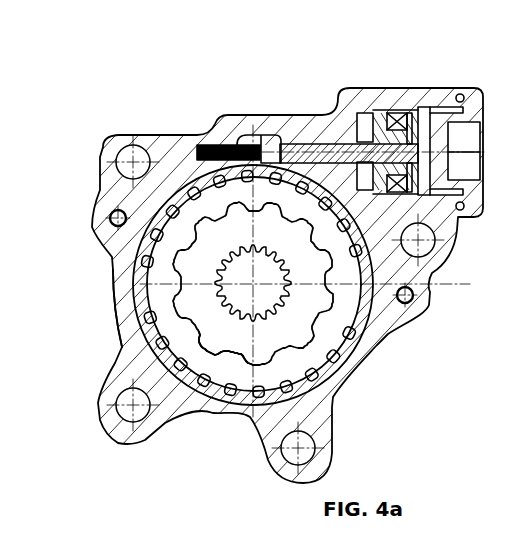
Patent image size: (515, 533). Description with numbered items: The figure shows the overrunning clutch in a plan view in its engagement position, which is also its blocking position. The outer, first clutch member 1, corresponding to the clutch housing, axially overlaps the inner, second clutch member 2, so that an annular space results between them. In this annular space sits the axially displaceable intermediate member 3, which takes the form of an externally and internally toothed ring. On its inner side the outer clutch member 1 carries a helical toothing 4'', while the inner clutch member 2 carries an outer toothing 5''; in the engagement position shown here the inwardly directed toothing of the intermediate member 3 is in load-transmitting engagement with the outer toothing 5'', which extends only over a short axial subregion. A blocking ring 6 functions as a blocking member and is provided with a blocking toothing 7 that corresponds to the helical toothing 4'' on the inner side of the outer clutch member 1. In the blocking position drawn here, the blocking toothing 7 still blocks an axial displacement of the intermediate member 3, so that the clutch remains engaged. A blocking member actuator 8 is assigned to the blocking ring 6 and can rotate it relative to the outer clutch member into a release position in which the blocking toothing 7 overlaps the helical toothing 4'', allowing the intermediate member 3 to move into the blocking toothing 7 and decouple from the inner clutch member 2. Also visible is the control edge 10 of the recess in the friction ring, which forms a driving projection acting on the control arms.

The first clutch member 1 is at (170, 155).
The second clutch member 2 is at (252, 245).
The intermediate member 3 is at (152, 278).
The helical toothing 4'' is at (297, 292).
The outer toothing 5'' is at (209, 417).
The blocking ring 6 is at (113, 307).
The blocking toothing 7 is at (333, 428).
The blocking member actuator 8 is at (325, 75).
The control edge 10 is at (416, 287).